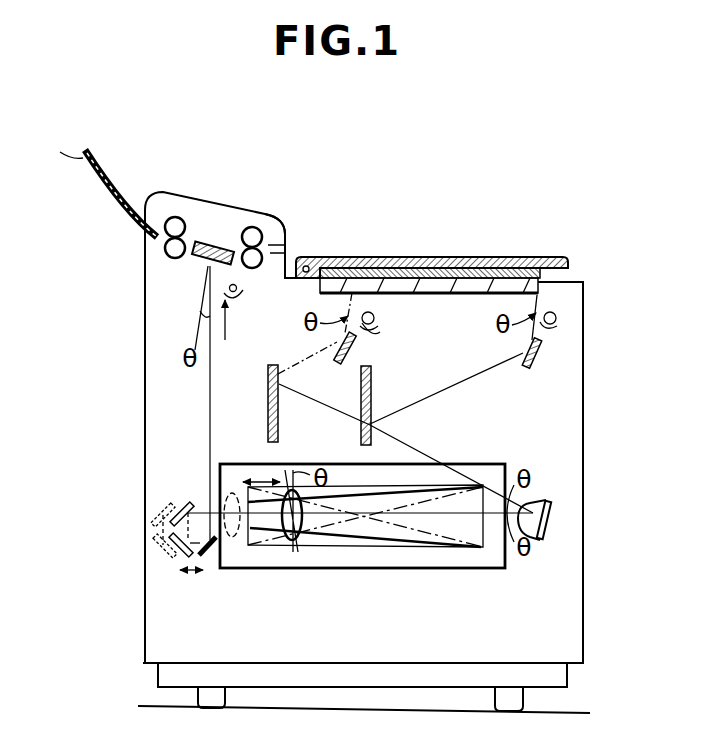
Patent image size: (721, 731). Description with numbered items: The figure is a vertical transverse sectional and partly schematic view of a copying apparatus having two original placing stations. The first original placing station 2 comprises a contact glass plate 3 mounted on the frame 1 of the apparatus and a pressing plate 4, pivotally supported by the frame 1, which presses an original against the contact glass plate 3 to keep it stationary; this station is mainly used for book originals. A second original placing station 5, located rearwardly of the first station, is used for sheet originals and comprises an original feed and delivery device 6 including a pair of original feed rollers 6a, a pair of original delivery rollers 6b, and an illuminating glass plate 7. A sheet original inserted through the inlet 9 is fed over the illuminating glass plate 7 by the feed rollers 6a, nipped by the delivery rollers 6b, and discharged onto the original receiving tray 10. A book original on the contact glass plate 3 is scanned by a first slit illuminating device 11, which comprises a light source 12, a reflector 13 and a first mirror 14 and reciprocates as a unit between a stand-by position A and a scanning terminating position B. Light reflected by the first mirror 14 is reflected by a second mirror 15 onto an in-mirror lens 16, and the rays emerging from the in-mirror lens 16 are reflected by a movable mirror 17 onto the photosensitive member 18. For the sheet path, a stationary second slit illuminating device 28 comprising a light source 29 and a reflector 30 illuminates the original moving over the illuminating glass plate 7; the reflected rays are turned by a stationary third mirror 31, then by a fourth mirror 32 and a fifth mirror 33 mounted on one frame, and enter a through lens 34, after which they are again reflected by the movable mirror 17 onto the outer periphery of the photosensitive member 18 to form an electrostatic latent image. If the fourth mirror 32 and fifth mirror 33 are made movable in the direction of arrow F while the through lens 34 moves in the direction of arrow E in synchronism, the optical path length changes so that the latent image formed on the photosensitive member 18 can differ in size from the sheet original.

The frame 1 is at (587, 328).
The first original placing station 2 is at (467, 256).
The contact glass plate 3 is at (513, 290).
The pressing plate 4 is at (390, 266).
The second original placing station 5 is at (290, 221).
The original feed and delivery device 6 is at (234, 222).
The original feed rollers 6a is at (259, 226).
The original delivery rollers 6b is at (174, 217).
The illuminating glass plate 7 is at (213, 243).
The inlet 9 is at (287, 240).
The original receiving tray 10 is at (89, 181).
The first slit illuminating device 11 is at (568, 360).
The light source 12 is at (377, 314).
The reflector 13 is at (375, 330).
The first mirror 14 is at (345, 352).
The second mirror 15 is at (268, 385).
The in-mirror lens 16 is at (550, 517).
The movable mirror 17 is at (480, 550).
The photosensitive member 18 is at (507, 563).
The second slit illuminating device 28 is at (231, 336).
The light source 29 is at (240, 286).
The reflector 30 is at (237, 295).
The third mirror 31 is at (208, 562).
The fourth mirror 32 is at (177, 560).
The fifth mirror 33 is at (183, 505).
The through lens 34 is at (285, 543).
The stand-by position A is at (573, 307).
The scanning terminating position B is at (371, 337).
The arrow E is at (255, 477).
The arrow F is at (191, 584).